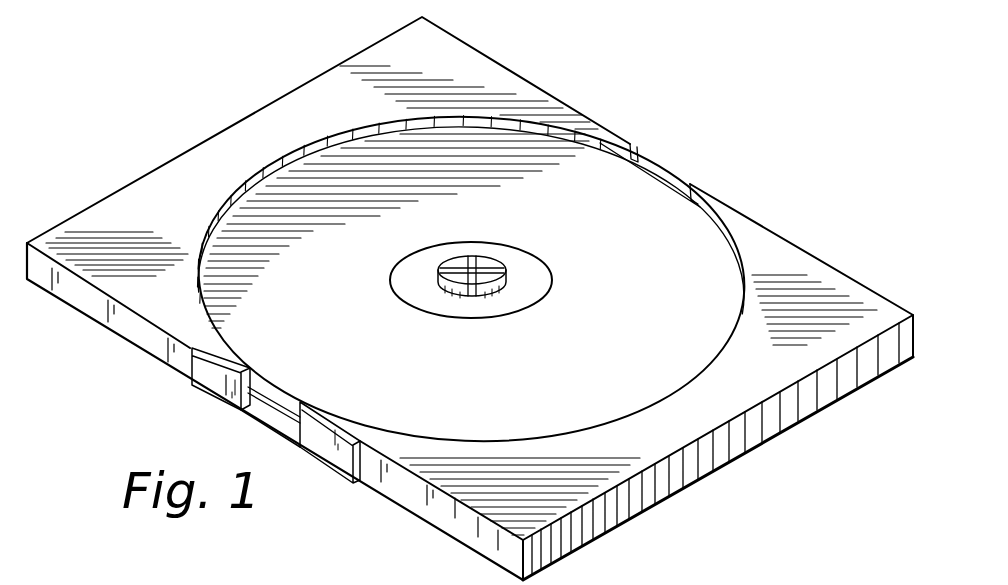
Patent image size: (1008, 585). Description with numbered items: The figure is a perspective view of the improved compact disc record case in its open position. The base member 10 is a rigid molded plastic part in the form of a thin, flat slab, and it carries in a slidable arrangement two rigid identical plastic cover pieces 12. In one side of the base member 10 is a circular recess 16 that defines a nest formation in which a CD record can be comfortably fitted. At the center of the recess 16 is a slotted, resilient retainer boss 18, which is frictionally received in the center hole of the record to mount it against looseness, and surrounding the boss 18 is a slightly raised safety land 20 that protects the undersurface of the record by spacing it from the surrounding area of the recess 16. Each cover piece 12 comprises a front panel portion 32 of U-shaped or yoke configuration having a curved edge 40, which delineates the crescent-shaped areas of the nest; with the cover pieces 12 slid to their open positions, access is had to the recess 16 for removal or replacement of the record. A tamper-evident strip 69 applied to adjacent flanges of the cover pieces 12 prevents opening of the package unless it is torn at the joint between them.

The base member 10 is at (668, 188).
The cover piece 12 is at (495, 52).
The circular recess 16 is at (570, 175).
The retainer boss 18 is at (490, 267).
The safety land 20 is at (535, 282).
The front panel portion 32 is at (240, 145).
The curved edge 40 is at (350, 125).
The tamper-evident strip 69 is at (208, 377).